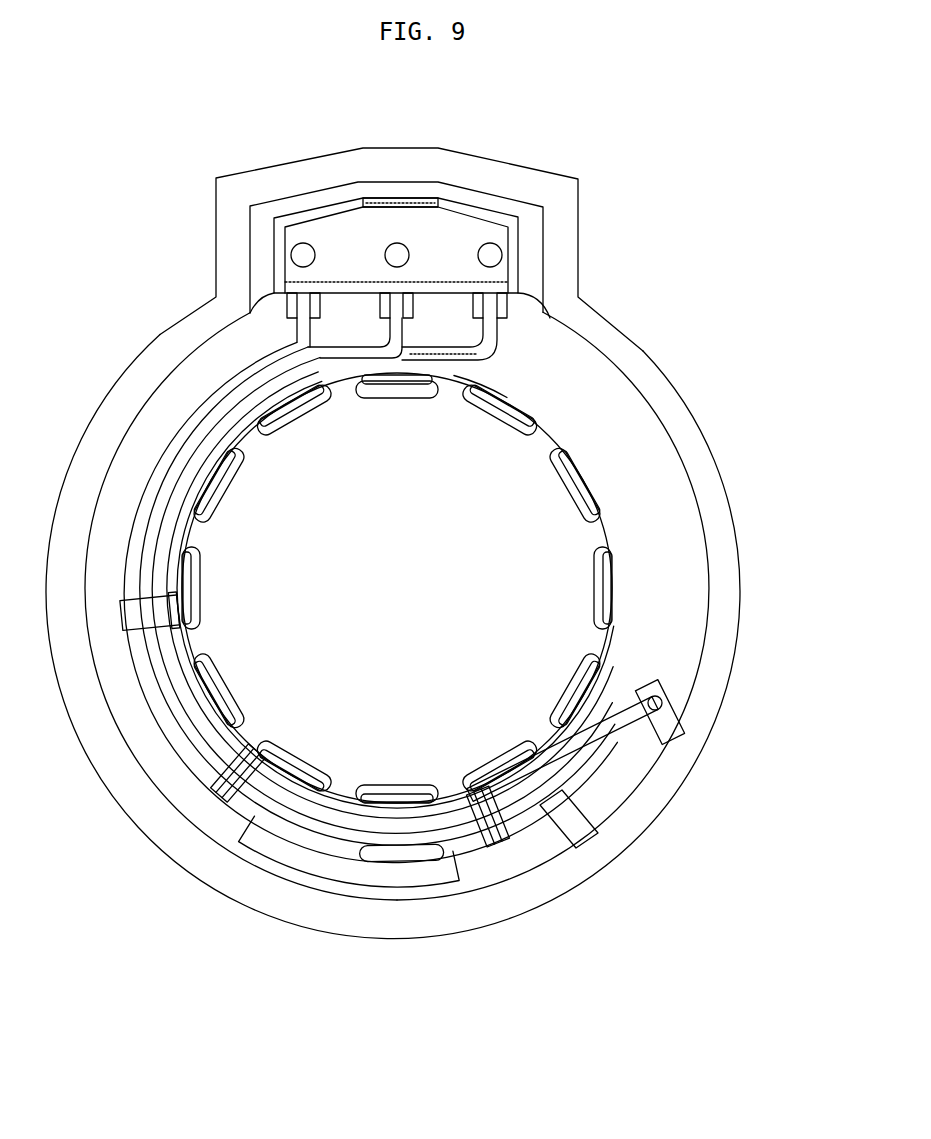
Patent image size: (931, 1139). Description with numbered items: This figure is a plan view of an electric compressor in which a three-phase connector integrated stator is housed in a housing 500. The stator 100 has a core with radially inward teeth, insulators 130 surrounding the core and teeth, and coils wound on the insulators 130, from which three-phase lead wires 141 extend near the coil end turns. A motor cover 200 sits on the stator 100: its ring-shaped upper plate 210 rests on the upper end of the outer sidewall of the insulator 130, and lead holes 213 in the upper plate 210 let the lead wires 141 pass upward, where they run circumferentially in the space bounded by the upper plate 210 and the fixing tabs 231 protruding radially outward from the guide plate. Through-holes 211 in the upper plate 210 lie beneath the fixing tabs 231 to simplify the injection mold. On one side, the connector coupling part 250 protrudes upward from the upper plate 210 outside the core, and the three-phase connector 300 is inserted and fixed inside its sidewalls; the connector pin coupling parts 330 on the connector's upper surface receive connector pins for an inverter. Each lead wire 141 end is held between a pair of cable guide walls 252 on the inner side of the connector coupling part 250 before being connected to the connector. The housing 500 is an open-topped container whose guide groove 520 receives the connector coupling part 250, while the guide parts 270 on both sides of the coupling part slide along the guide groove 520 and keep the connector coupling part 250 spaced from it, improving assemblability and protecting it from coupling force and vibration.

The stator 100 is at (301, 912).
The insulator 130 is at (415, 800).
The lead wire 141 is at (177, 428).
The motor cover 200 is at (628, 347).
The upper plate 210 is at (672, 508).
The through-hole 211 is at (238, 848).
The lead hole 213 is at (650, 735).
The fixing tab 231 is at (205, 778).
The connector coupling part 250 is at (388, 197).
The cable guide wall 252 is at (282, 256).
The guide part 270 is at (263, 310).
The 3-phase connector 300 is at (349, 190).
The connector pin coupling part 330 is at (306, 268).
The housing 500 is at (708, 430).
The guide groove 520 is at (543, 250).